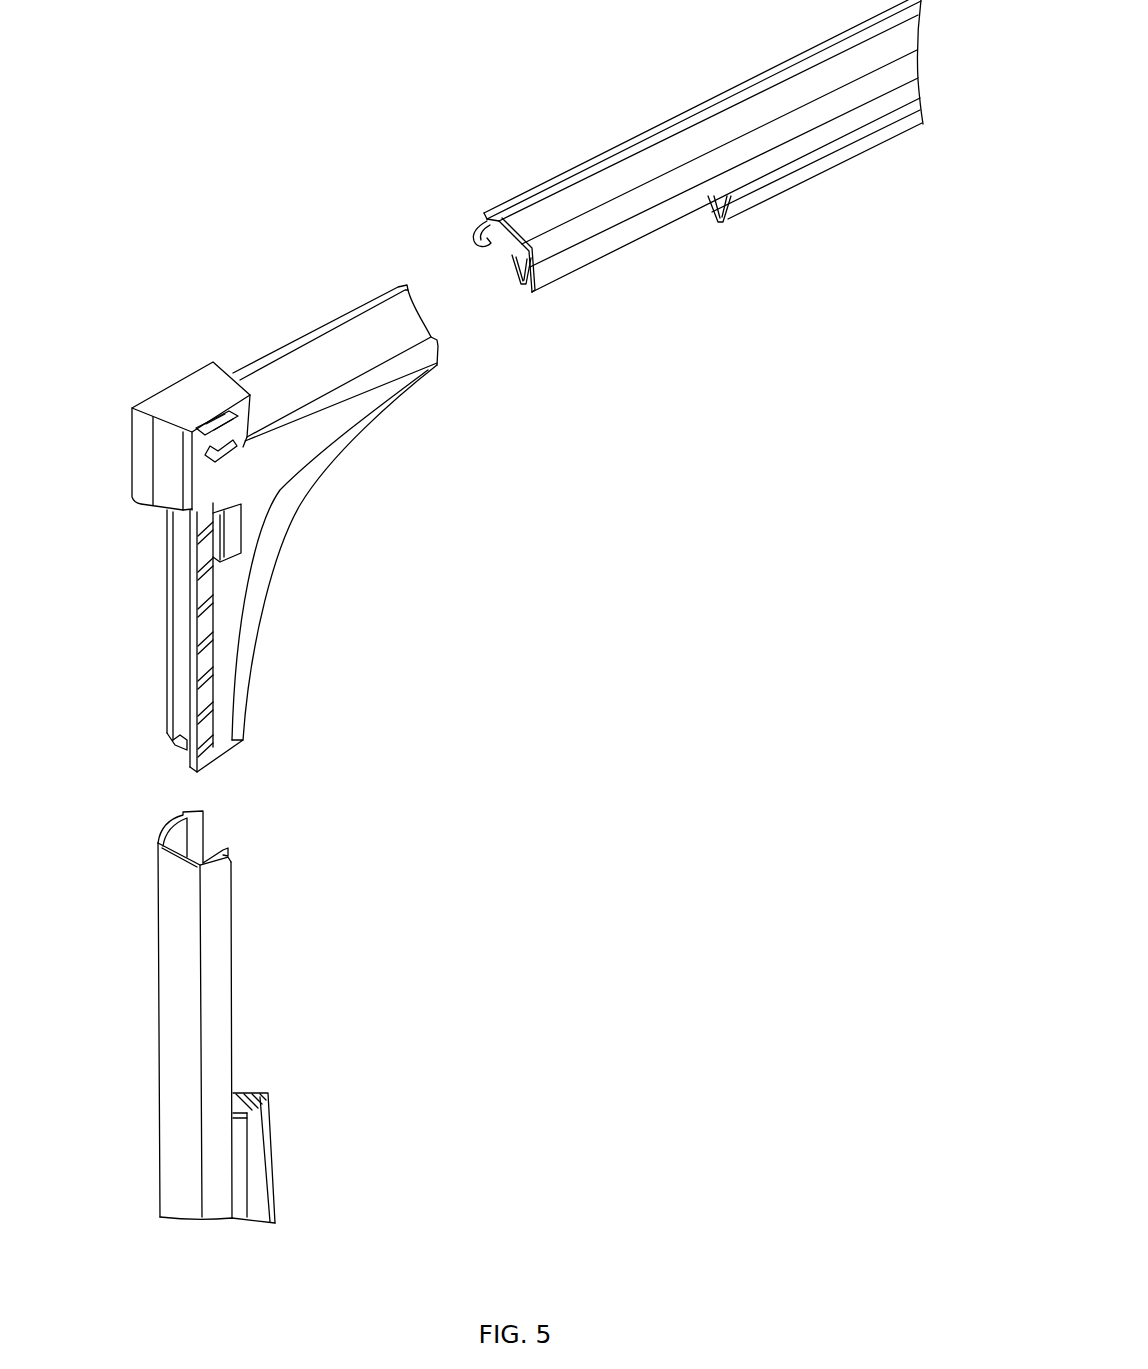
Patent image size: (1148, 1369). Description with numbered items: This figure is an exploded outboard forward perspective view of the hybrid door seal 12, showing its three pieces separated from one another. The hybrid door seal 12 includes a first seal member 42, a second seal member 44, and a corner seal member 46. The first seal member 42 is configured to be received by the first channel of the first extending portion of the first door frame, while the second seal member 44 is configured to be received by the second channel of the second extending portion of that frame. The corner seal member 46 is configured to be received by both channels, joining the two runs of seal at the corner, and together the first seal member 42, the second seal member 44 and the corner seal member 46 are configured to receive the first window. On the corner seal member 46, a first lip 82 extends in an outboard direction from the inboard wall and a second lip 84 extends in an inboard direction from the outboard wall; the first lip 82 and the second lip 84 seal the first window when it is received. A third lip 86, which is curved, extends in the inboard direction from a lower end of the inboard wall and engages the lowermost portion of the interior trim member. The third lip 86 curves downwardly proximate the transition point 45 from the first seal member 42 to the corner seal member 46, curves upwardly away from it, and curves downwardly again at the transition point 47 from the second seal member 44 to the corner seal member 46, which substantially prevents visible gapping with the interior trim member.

The hybrid door seal 12 is at (272, 183).
The first seal member 42 is at (649, 126).
The second seal member 44 is at (158, 1017).
The transition point 45 is at (439, 366).
The corner seal member 46 is at (289, 338).
The transition point 47 is at (246, 742).
The first lip 82 is at (512, 259).
The second lip 84 is at (481, 247).
The third lip 86 is at (327, 467).